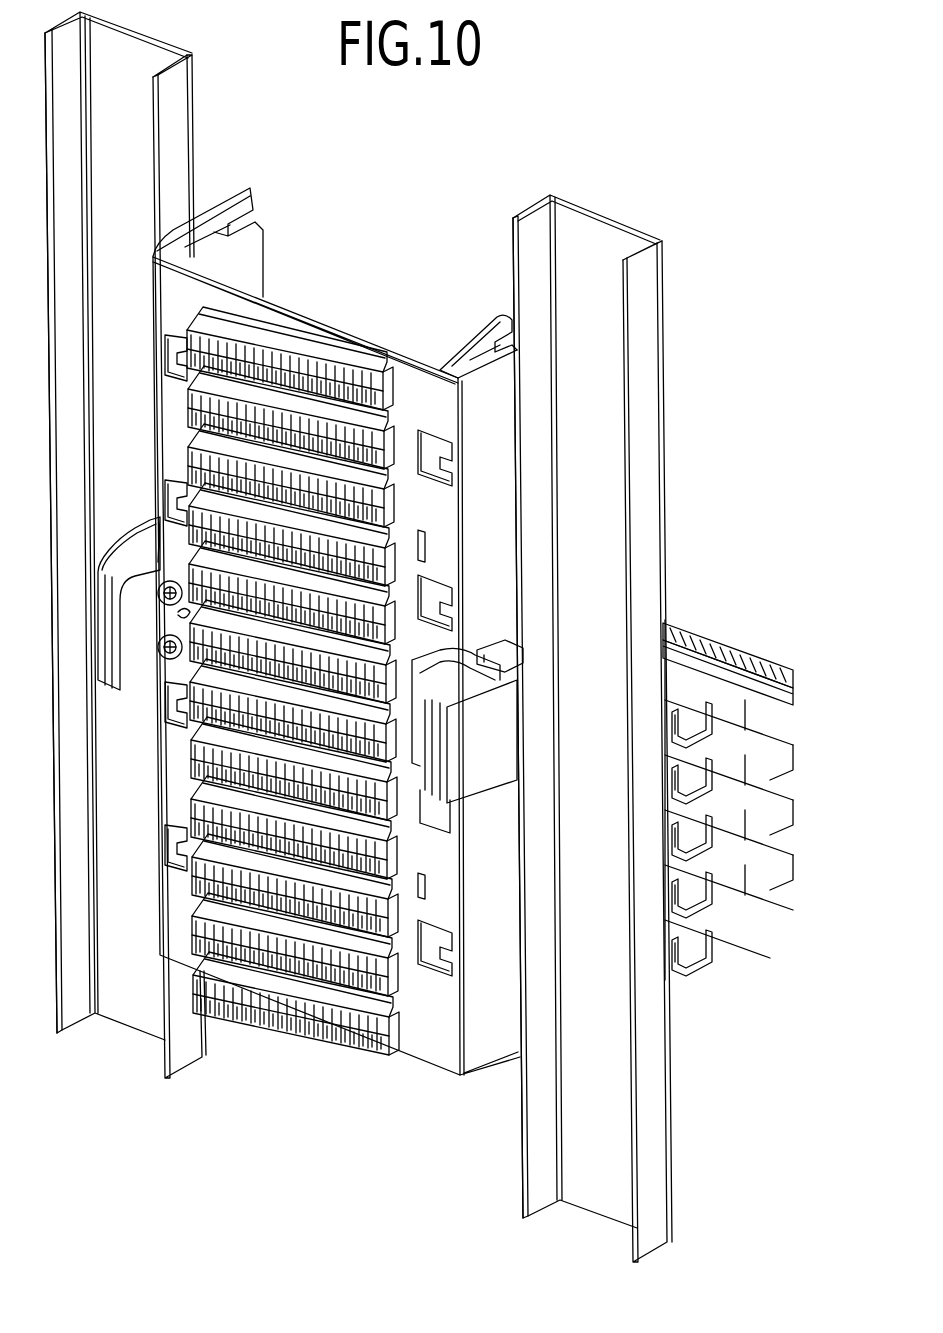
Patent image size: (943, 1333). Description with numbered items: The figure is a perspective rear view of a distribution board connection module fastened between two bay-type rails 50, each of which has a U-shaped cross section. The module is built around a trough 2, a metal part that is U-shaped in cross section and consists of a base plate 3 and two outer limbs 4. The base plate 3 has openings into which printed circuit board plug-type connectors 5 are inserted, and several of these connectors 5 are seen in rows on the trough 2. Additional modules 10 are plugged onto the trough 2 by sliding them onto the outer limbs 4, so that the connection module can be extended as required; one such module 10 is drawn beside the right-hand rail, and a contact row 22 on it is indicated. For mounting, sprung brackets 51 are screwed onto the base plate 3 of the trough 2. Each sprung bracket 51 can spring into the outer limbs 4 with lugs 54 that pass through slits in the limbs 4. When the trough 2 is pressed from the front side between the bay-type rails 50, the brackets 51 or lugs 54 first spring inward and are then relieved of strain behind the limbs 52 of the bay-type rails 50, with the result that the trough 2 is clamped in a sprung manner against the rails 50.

The trough 2 is at (302, 298).
The base plate 3 is at (400, 380).
The limbs 4 is at (207, 230).
The printed circuit board plug-type connectors 5 is at (300, 1030).
The modules 10 is at (678, 680).
The contact row 22 is at (752, 652).
The bay-type rails 50 is at (105, 497).
The sprung brackets 51 is at (478, 765).
The limbs 52 is at (170, 1048).
The lugs 54 is at (502, 656).